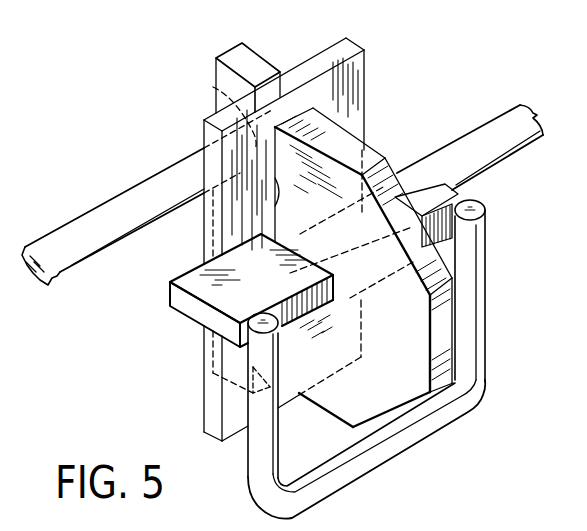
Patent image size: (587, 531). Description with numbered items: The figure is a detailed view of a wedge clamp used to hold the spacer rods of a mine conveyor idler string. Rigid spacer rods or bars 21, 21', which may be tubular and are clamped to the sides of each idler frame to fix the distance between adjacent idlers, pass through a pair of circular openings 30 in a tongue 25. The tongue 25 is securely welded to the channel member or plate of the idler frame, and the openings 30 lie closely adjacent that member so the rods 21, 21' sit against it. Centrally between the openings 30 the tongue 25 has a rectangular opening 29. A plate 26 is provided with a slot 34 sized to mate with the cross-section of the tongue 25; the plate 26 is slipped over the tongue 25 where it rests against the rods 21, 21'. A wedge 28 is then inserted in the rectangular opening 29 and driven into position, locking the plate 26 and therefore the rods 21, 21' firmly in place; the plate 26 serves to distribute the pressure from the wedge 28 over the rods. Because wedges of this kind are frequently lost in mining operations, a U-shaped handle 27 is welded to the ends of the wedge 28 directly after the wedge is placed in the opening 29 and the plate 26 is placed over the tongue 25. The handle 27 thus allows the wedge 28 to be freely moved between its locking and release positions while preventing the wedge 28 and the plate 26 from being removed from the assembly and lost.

The spacer rod 21 is at (113, 216).
The spacer rod 21' is at (470, 141).
The tongue 25 is at (258, 58).
The plate 26 is at (357, 88).
The U-shaped handle 27 is at (458, 360).
The wedge 28 is at (190, 302).
The rectangular opening 29 is at (300, 250).
The circular openings 30 is at (212, 97).
The slot 34 is at (278, 200).